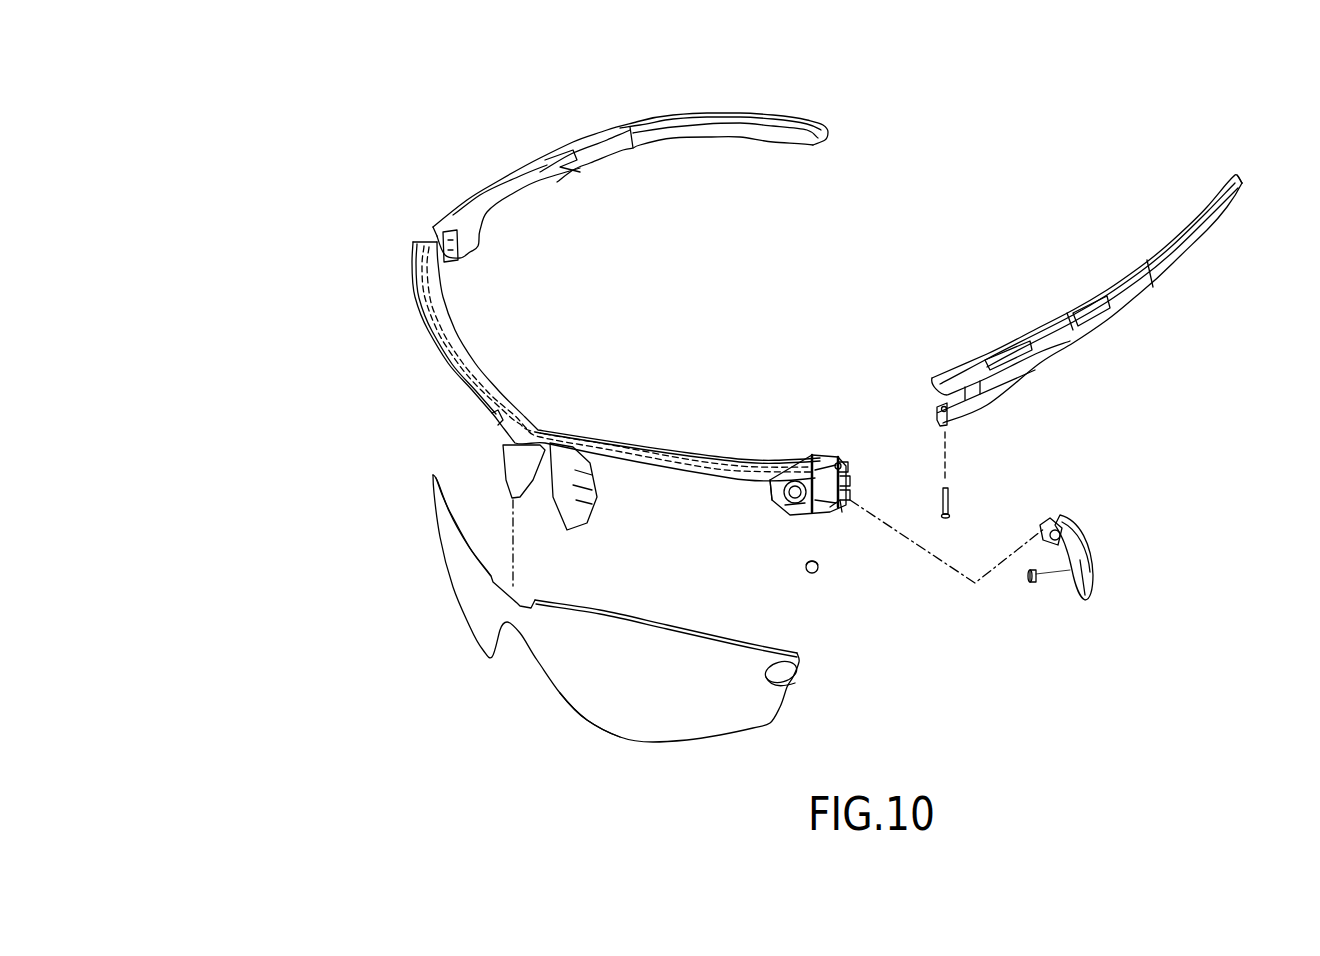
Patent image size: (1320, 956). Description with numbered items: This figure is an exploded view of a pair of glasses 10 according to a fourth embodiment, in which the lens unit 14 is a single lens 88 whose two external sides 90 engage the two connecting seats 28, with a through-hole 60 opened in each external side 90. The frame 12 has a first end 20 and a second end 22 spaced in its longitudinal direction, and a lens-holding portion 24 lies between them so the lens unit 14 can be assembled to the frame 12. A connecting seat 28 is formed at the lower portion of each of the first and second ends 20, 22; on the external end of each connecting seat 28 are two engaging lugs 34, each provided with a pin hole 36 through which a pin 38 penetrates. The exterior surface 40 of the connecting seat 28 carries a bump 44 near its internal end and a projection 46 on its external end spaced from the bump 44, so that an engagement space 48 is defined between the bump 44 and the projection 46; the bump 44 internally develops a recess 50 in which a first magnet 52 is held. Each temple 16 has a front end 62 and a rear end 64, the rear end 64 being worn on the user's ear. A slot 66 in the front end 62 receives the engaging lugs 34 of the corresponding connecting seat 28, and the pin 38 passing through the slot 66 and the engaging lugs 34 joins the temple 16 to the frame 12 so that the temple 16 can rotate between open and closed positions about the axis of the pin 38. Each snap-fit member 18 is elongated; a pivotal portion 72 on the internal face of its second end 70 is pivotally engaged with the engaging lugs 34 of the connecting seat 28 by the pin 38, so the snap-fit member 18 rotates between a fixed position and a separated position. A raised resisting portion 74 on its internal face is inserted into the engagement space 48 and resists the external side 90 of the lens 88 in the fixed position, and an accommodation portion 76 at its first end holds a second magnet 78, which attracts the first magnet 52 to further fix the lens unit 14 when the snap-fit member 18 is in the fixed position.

The glasses 10 is at (294, 198).
The frame 12 is at (520, 418).
The lens unit 14 is at (507, 706).
The temple 16 is at (565, 150).
The snap-fit member 18 is at (1087, 551).
The first end 20 is at (425, 245).
The second end 22 is at (807, 453).
The lens-holding portion 24 is at (463, 346).
The connecting seat 28 is at (455, 264).
The engaging lug 34 is at (843, 467).
The pin hole 36 is at (830, 453).
The pin 38 is at (950, 499).
The exterior surface 40 is at (777, 487).
The bump 44 is at (790, 480).
The projection 46 is at (843, 477).
The engagement space 48 is at (843, 488).
The recess 50 is at (790, 498).
The first magnet 52 is at (808, 574).
The through-hole 60 is at (783, 668).
The front end 62 is at (963, 380).
The rear end 64 is at (1237, 173).
The slot 66 is at (960, 414).
The second end 70 is at (1050, 524).
The pivotal portion 72 is at (1050, 514).
The resisting portion 74 is at (1073, 538).
The accommodation portion 76 is at (1090, 588).
The second magnet 78 is at (1030, 583).
The lens 88 is at (587, 712).
The external side 90 is at (793, 682).